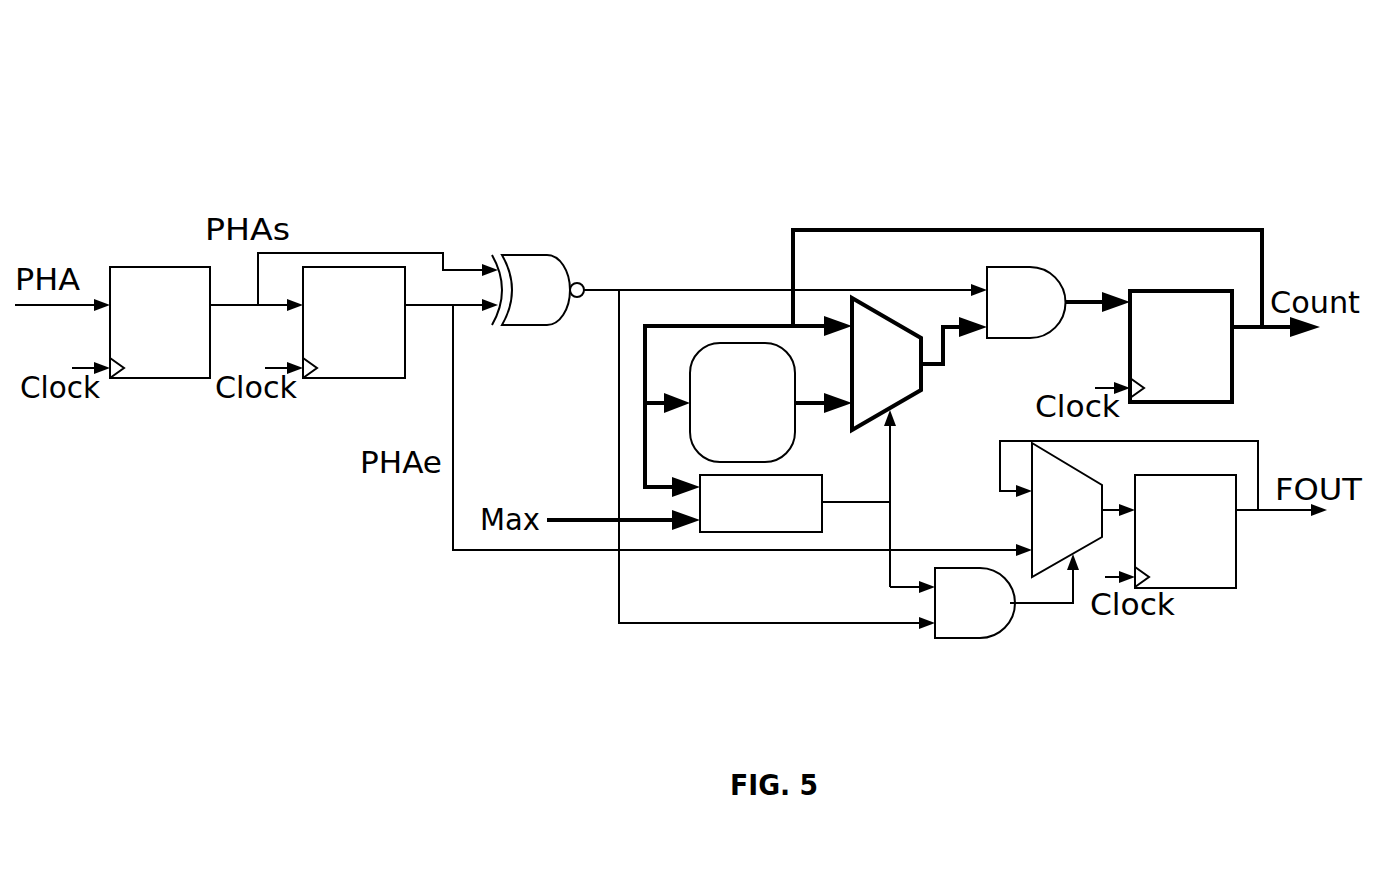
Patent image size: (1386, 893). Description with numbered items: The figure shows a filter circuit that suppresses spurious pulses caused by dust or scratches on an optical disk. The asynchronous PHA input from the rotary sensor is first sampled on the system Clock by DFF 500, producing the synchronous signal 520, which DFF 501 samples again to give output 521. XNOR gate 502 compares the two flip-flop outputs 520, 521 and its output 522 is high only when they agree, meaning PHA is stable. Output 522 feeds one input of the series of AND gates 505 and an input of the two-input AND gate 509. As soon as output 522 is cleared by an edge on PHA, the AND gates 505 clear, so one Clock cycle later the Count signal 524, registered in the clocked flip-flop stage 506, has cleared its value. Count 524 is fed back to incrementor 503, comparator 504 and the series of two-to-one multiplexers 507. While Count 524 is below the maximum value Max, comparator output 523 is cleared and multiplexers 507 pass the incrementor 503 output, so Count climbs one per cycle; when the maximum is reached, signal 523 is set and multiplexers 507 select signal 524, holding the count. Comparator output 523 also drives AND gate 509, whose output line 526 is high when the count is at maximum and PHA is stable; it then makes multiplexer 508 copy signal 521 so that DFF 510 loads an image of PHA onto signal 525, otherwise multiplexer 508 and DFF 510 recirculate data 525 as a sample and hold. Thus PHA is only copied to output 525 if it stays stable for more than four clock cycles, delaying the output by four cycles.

The DFF 500 is at (153, 266).
The DFF 501 is at (335, 378).
The XNOR gate 502 is at (532, 255).
The incrementor 503 is at (737, 343).
The comparator 504 is at (783, 475).
The series of AND gates 505 is at (987, 278).
The D flip-flop with synchronous reset (Dffs) 506 is at (1180, 291).
The series of 2 to 1 multiplexers 507 is at (915, 387).
The 2 to 1 multiplexer 508 is at (1030, 535).
The two-input AND gate 509 is at (955, 638).
The DFF 510 is at (1236, 565).
The signal 520 is at (393, 252).
The output 521 is at (475, 551).
The output 522 is at (710, 289).
The signal 523 is at (890, 498).
The Count signal 524 is at (1262, 266).
The signal 525 is at (1258, 452).
The mux select signal line 526 is at (1030, 604).